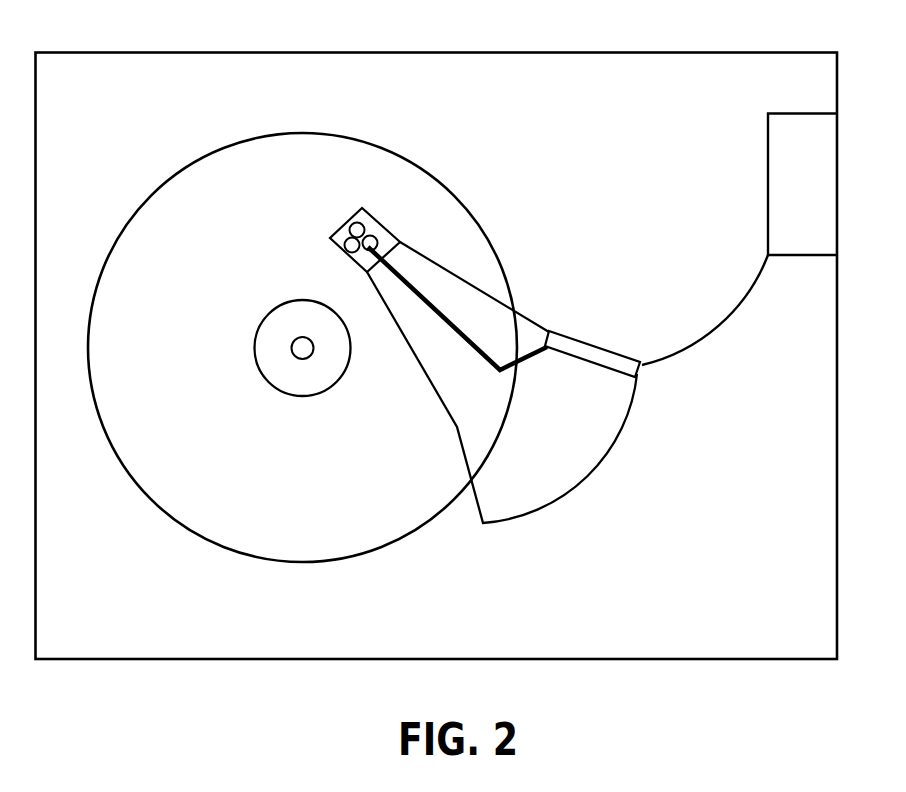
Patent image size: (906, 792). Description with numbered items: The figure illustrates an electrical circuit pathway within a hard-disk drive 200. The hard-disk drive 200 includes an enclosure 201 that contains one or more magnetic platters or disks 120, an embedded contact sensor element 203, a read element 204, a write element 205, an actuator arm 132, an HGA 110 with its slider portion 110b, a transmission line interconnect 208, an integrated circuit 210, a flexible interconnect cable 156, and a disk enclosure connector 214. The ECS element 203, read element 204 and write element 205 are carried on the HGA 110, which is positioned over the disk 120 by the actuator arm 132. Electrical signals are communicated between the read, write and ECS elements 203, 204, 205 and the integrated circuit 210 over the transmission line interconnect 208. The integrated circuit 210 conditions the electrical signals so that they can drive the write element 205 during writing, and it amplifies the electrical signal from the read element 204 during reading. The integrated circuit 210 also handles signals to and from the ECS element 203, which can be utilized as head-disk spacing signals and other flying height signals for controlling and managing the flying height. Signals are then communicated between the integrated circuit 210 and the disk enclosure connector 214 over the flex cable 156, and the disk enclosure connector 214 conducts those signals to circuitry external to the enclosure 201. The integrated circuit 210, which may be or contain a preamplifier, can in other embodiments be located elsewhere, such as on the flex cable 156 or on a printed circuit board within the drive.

The hard-disk drive 200 is at (466, 36).
The enclosure 201 is at (733, 53).
The magnetic disk 120 is at (440, 180).
The HGA 110 is at (367, 270).
The slider body 110b is at (345, 224).
The embedded contact sensor element 203 is at (362, 268).
The read element 204 is at (343, 243).
The write element 205 is at (376, 240).
The transmission line interconnect 208 is at (458, 328).
The integrated circuit 210 is at (583, 343).
The actuator arm 132 is at (430, 353).
The flex cable 156 is at (707, 338).
The disk enclosure connector 214 is at (772, 193).